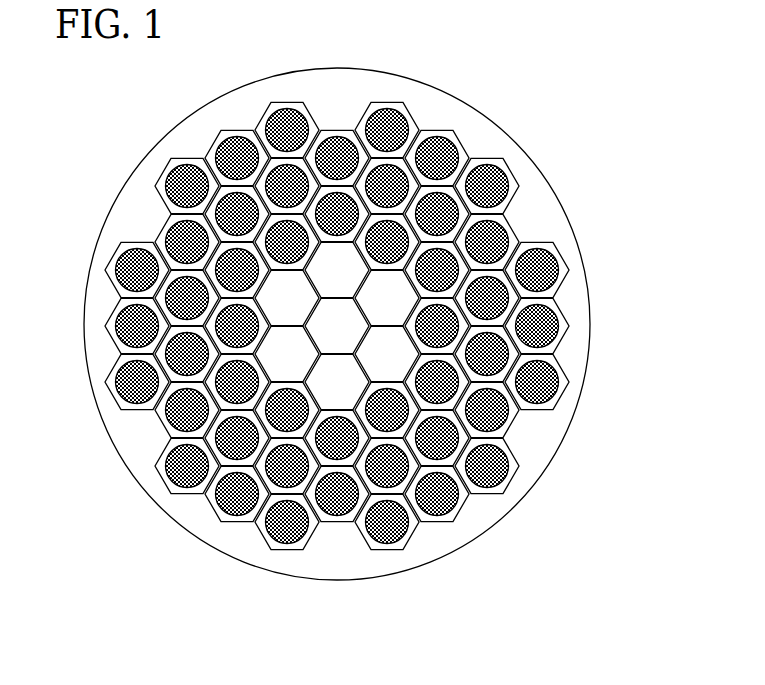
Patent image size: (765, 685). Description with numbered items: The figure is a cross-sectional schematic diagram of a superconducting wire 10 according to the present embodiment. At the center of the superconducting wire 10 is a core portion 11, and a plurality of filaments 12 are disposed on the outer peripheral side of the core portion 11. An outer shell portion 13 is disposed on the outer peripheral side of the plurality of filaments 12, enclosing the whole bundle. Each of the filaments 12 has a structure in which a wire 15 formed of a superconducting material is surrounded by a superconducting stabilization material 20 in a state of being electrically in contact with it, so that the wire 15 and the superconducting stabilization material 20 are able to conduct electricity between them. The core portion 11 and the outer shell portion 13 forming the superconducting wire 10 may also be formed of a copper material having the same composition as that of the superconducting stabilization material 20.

The superconducting wire 10 is at (360, 318).
The core portion 11 is at (282, 353).
The filaments 12 is at (524, 219).
The outer shell portion 13 is at (542, 440).
The wire 15 is at (553, 332).
The superconducting stabilization material 20 is at (563, 310).